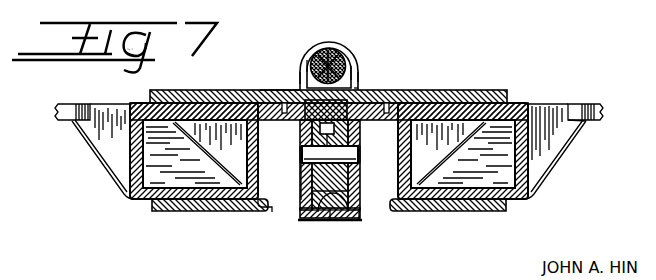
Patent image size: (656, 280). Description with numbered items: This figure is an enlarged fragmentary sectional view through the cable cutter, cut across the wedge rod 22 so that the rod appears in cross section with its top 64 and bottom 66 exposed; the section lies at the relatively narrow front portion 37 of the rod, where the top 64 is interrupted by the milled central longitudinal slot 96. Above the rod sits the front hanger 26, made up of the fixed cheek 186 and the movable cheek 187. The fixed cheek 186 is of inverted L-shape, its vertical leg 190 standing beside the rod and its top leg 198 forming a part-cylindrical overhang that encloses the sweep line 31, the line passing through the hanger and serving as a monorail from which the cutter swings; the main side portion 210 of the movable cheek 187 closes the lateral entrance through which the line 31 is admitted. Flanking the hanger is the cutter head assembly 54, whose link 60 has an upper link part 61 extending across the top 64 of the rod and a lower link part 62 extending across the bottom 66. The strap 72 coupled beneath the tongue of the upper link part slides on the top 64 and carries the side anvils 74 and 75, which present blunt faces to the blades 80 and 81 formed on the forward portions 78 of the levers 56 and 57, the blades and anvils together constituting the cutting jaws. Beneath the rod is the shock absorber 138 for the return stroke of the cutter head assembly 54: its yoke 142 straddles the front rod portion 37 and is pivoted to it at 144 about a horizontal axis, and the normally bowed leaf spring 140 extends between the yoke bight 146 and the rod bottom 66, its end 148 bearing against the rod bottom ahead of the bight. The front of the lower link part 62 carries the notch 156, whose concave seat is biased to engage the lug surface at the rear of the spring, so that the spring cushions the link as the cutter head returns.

The top leg 198 is at (329, 48).
The sweep line 31 is at (322, 56).
The front hanger 26 is at (352, 45).
The fixed cheek 186 is at (358, 66).
The vertical leg 190 is at (359, 72).
The strap 72 is at (365, 91).
The movable cheek 187 is at (312, 60).
The main side portion 210 is at (300, 72).
The top of the rod 64 is at (298, 94).
The upper link part 61 is at (445, 90).
The link 60 is at (485, 89).
The cutter head assembly 54 is at (572, 99).
The lever 57 is at (72, 133).
The forward portions of the levers 78 is at (92, 154).
The lever 56 is at (582, 131).
The blade 81 is at (283, 115).
The blade 80 is at (387, 115).
The side anvil 75 is at (301, 150).
The side anvil 74 is at (356, 151).
The central longitudinal slot 96 is at (330, 154).
The yoke pivot 144 is at (302, 170).
The front portion of the rod 37 is at (350, 180).
The spring end 148 is at (351, 193).
The lower link part 62 is at (199, 208).
The notch 156 is at (271, 203).
The wedge rod 22 is at (303, 201).
The shock absorber 138 is at (310, 229).
The bottom of the rod 66 is at (327, 222).
The yoke 142 is at (350, 222).
The yoke bight 146 is at (322, 224).
The leaf spring 140 is at (338, 224).